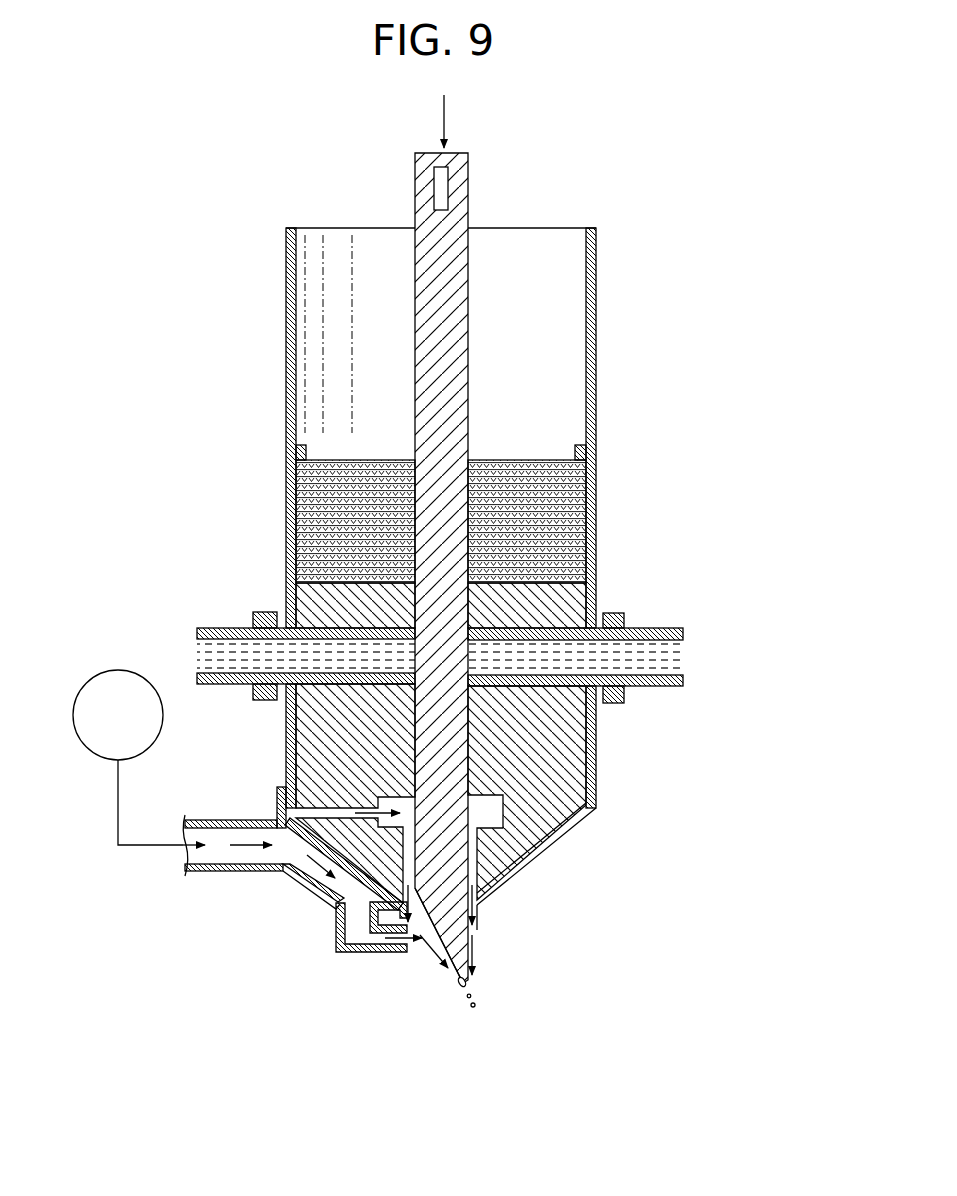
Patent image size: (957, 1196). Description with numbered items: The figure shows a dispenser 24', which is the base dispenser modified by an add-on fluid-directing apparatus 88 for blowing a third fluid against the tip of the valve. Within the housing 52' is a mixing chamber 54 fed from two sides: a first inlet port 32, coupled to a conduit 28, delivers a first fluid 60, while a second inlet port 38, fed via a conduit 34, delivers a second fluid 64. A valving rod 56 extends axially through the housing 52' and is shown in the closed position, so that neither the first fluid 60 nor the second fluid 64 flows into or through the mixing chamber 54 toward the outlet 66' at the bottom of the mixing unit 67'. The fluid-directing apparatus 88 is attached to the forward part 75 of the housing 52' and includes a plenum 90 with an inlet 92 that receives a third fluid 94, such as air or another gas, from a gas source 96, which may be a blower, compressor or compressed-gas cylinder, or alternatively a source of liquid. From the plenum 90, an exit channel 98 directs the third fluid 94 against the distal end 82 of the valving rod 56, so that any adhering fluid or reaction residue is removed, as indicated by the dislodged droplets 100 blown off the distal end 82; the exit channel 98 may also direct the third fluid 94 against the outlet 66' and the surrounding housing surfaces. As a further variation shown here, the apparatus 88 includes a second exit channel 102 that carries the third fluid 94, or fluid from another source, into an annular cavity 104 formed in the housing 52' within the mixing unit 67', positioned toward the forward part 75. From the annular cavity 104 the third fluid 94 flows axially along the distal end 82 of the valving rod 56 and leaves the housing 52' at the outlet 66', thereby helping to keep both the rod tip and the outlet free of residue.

The dispenser 24' is at (699, 284).
The conduit 28 is at (663, 628).
The first inlet port 32 is at (560, 622).
The conduit 34 is at (213, 628).
The second inlet port 38 is at (330, 685).
The housing 52' is at (483, 518).
The mixing chamber 54 is at (470, 815).
The valving rod 56 is at (470, 205).
The first fluid 60 is at (665, 658).
The second fluid 64 is at (217, 653).
The outlet 66' is at (528, 911).
The mixing unit 67' is at (562, 793).
The forward part of housing 75 is at (538, 860).
The distal end of valving rod 82 is at (455, 944).
The fluid-directing apparatus 88 is at (320, 906).
The plenum 90 is at (300, 887).
The inlet 92 is at (205, 872).
The third fluid 94 is at (385, 805).
The gas source 96 is at (97, 670).
The exit channel 98 is at (360, 953).
The dislodged droplets 100 is at (471, 1008).
The second exit channel 102 is at (290, 800).
The annular cavity 104 is at (392, 797).